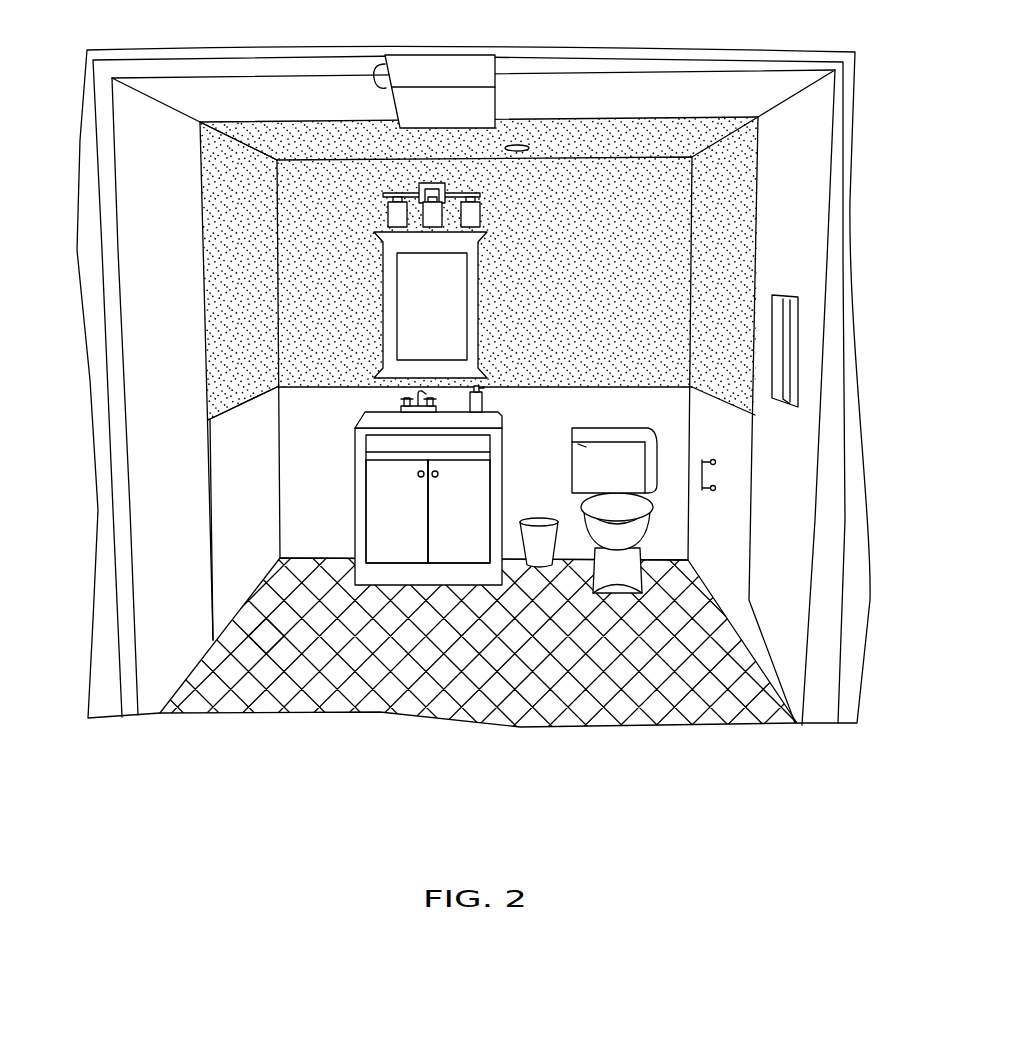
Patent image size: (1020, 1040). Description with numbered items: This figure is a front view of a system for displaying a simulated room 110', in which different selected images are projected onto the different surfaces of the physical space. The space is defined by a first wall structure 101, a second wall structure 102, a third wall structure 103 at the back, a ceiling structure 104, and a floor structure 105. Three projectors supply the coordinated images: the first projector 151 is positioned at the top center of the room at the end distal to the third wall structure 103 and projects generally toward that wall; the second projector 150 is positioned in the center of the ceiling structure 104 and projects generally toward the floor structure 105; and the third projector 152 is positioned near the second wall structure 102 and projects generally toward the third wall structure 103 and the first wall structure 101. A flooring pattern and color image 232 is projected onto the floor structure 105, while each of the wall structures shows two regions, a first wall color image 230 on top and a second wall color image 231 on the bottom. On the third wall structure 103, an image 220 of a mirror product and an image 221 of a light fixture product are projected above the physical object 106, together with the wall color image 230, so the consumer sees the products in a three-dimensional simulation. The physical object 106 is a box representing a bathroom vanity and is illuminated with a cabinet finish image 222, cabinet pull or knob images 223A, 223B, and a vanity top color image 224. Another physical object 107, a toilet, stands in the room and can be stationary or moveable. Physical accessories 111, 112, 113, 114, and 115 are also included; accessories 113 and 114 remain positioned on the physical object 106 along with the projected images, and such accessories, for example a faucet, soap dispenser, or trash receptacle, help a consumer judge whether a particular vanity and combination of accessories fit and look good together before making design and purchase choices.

The first wall structure 101 is at (207, 360).
The second wall structure 102 is at (770, 262).
The third wall structure 103 is at (290, 187).
The ceiling structure 104 is at (685, 133).
The floor structure 105 is at (327, 640).
The physical object 106 is at (410, 522).
The physical object 107 is at (648, 595).
The simulated room 110' is at (473, 441).
The physical accessory 111 is at (717, 462).
The physical accessory 112 is at (540, 557).
The physical accessory 113 is at (400, 400).
The physical accessory 114 is at (485, 397).
The physical accessory 115 is at (536, 357).
The second projector 150 is at (513, 152).
The first projector 151 is at (455, 103).
The third projector 152 is at (780, 358).
The image of a mirror product 220 is at (403, 315).
The image of a light fixture product 221 is at (392, 212).
The cabinet finish image 222 is at (428, 542).
The cabinet pull or knob image 223A is at (420, 478).
The cabinet pull or knob image 223B is at (436, 478).
The vanity top color image 224 is at (385, 422).
The first wall color image 230 is at (212, 165).
The second wall color image 231 is at (225, 463).
The flooring pattern and color image 232 is at (261, 638).